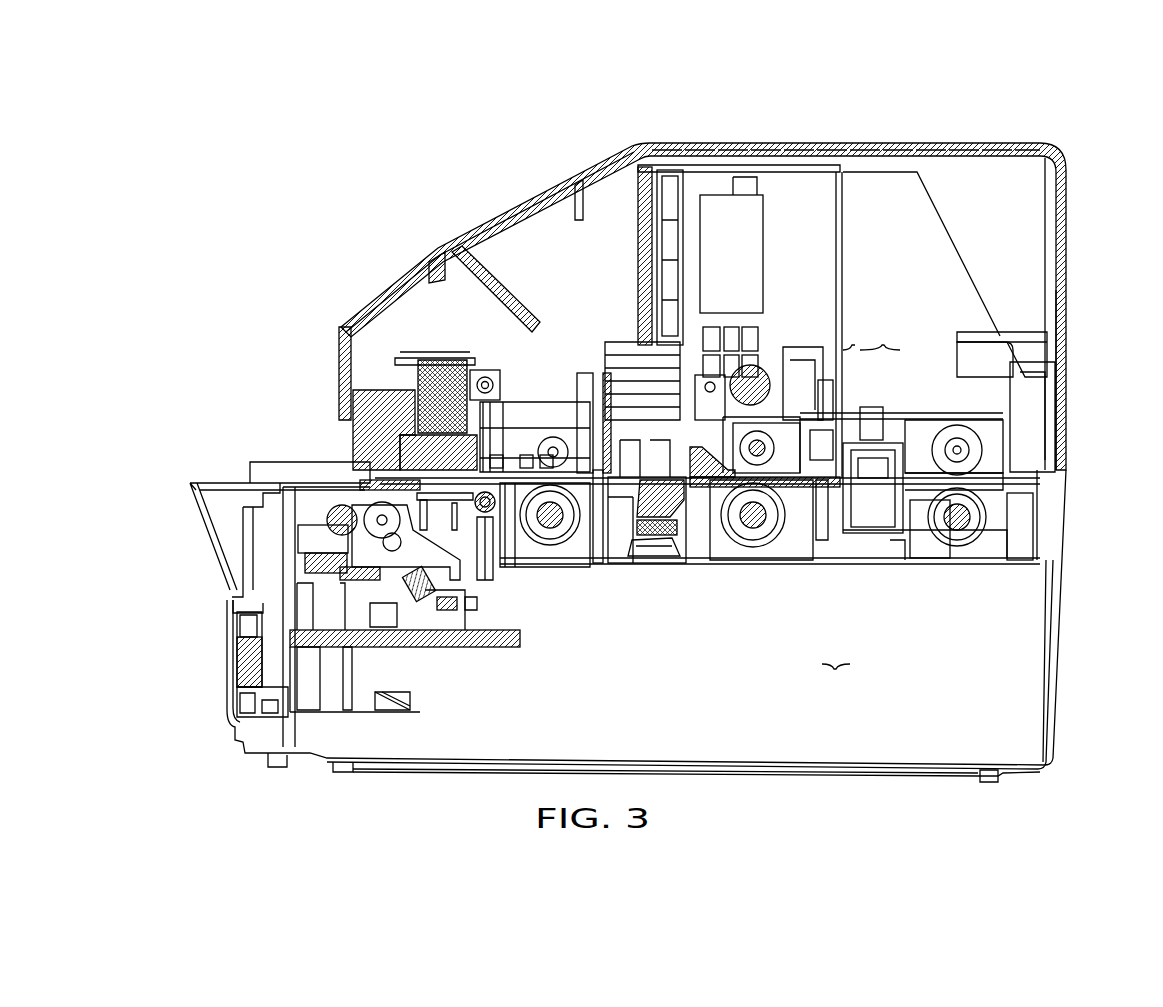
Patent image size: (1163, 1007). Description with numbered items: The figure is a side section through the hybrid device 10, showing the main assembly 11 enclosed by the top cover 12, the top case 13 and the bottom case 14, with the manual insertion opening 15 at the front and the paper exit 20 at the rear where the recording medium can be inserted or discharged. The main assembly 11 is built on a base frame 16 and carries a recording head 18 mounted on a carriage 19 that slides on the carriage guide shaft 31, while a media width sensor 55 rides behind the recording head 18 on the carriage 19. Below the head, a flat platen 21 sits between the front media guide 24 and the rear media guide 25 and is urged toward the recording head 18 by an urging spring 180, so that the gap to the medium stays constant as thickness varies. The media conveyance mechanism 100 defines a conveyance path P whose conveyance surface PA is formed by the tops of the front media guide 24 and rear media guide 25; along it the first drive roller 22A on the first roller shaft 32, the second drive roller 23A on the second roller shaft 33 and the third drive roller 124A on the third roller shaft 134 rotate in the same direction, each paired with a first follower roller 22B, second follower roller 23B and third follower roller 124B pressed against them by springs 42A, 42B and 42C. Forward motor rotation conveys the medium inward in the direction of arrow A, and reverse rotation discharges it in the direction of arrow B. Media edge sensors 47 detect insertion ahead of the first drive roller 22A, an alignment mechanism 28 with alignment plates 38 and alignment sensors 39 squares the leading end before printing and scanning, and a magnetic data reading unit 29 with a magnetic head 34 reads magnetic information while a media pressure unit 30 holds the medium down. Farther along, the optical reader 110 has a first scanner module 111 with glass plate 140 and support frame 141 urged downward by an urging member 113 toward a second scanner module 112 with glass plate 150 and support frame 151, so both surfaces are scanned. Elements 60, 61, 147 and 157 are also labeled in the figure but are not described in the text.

The hybrid device 10 is at (955, 105).
The main assembly 11 is at (970, 238).
The top cover 12 is at (962, 148).
The top case 13 is at (340, 345).
The bottom case 14 is at (245, 742).
The manual insertion opening 15 is at (215, 425).
The base frame 16 is at (875, 565).
The recording head 18 is at (630, 348).
The carriage 19 is at (762, 335).
The paper exit 20 is at (1080, 490).
The platen 21 is at (660, 562).
The first drive roller 22A is at (560, 548).
The first follower roller 22B is at (545, 405).
The second drive roller 23A is at (762, 548).
The second follower roller 23B is at (780, 528).
The front media guide 24 is at (510, 560).
The rear media guide 25 is at (960, 548).
The alignment mechanism 28 is at (620, 565).
The magnetic data reading unit 29 is at (272, 555).
The media pressure unit 30 is at (355, 420).
The carriage guide shaft 31 is at (828, 335).
The first roller shaft 32 is at (545, 548).
The second roller shaft 33 is at (805, 530).
The magnetic head 34 is at (395, 712).
The alignment plates 38 is at (605, 562).
The alignment sensors 39 is at (633, 200).
The spring 42A is at (575, 400).
The spring 42B is at (800, 430).
The spring 42C is at (954, 428).
The media edge sensors 47 is at (487, 515).
The media width sensor 55 is at (745, 572).
The drive unit 60 is at (280, 628).
The motor 61 is at (440, 650).
The media conveyance mechanism 100 is at (766, 700).
The optical reader 110 is at (1040, 300).
The first scanner module 111 is at (871, 336).
The second scanner module 112 is at (848, 680).
The urging member 113 is at (905, 415).
The third drive roller 124A is at (935, 560).
The third follower roller 124B is at (1020, 562).
The third roller shaft 134 is at (950, 565).
The glass plate 140 is at (840, 430).
The support frame 141 is at (878, 430).
The guide member 147 is at (945, 420).
The glass plate 150 is at (848, 535).
The support frame 151 is at (885, 535).
The blade holder 157 is at (900, 560).
The urging spring 180 is at (690, 560).
The arrow A is at (330, 441).
The arrow B is at (330, 452).
The conveyance path P is at (822, 545).
The conveyance surface PA is at (1065, 470).